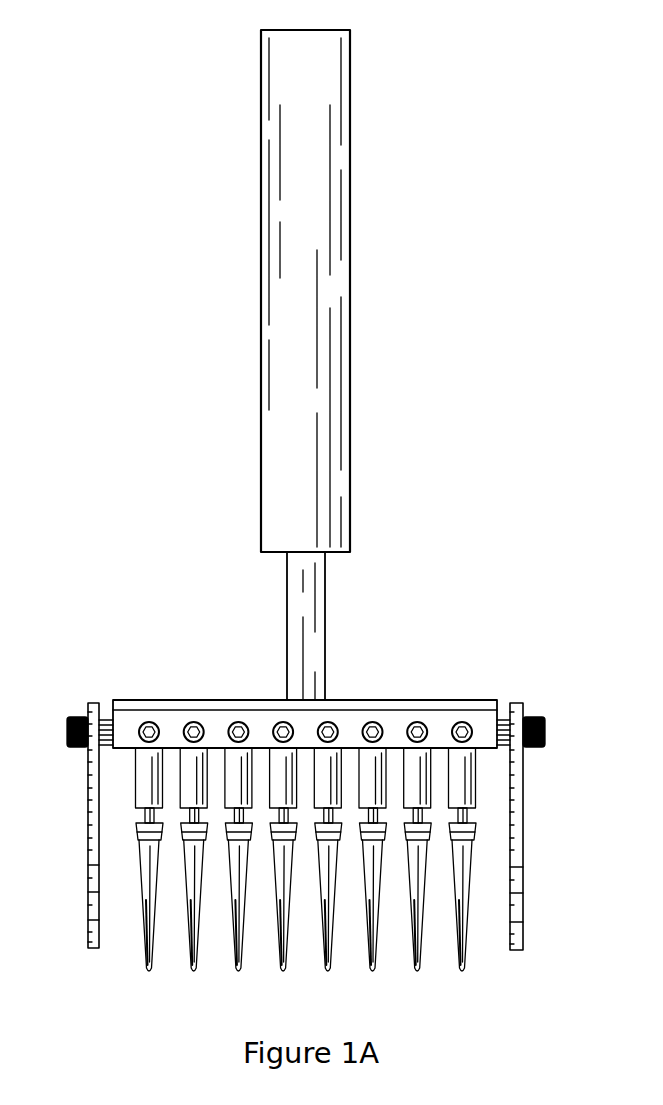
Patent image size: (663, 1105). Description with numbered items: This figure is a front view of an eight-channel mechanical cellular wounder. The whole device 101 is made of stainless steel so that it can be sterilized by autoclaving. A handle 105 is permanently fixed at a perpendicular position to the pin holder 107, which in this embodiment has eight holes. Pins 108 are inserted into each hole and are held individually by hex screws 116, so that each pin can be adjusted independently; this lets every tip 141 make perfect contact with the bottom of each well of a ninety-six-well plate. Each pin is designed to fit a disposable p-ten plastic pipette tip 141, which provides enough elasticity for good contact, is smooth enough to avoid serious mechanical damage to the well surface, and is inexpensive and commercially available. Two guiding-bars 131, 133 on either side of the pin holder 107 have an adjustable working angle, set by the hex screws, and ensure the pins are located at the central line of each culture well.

The whole device 101 is at (160, 161).
The handle 105 is at (287, 340).
The pin holder 107 is at (412, 700).
The hex screws 116 is at (233, 722).
The pins 108 is at (143, 776).
The guiding-bar 131 is at (90, 822).
The guiding-bar 133 is at (518, 837).
The pipette tips 141 is at (242, 918).